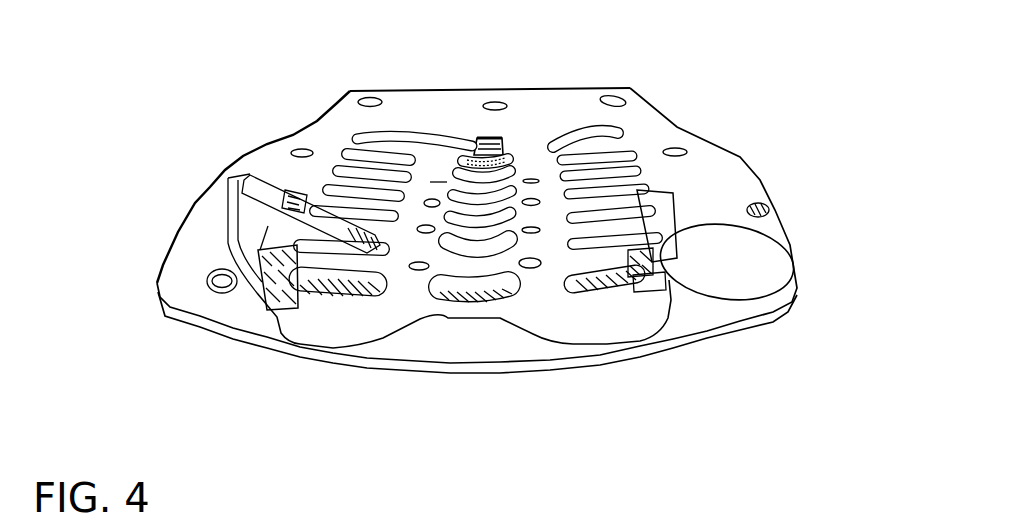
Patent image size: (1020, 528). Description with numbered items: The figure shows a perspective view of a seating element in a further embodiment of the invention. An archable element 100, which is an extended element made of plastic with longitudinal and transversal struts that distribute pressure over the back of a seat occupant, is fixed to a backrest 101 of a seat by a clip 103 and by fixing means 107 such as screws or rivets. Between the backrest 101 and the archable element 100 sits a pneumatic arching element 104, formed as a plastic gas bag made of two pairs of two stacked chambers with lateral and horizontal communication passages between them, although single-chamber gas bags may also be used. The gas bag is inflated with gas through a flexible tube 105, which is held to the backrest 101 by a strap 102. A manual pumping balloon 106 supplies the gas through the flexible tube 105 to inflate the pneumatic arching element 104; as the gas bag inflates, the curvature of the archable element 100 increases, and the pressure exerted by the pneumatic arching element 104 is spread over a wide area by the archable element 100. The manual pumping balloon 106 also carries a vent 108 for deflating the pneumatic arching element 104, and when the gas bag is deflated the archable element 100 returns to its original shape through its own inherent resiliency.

The archable element 100 is at (610, 132).
The backrest 101 is at (540, 98).
The strap 102 is at (248, 290).
The clip 103 is at (486, 139).
The pneumatic arching element 104 is at (583, 215).
The flexible tube 105 is at (230, 213).
The manual pumping balloon 106 is at (753, 240).
The fixing means 107 is at (322, 335).
The vent 108 is at (641, 256).